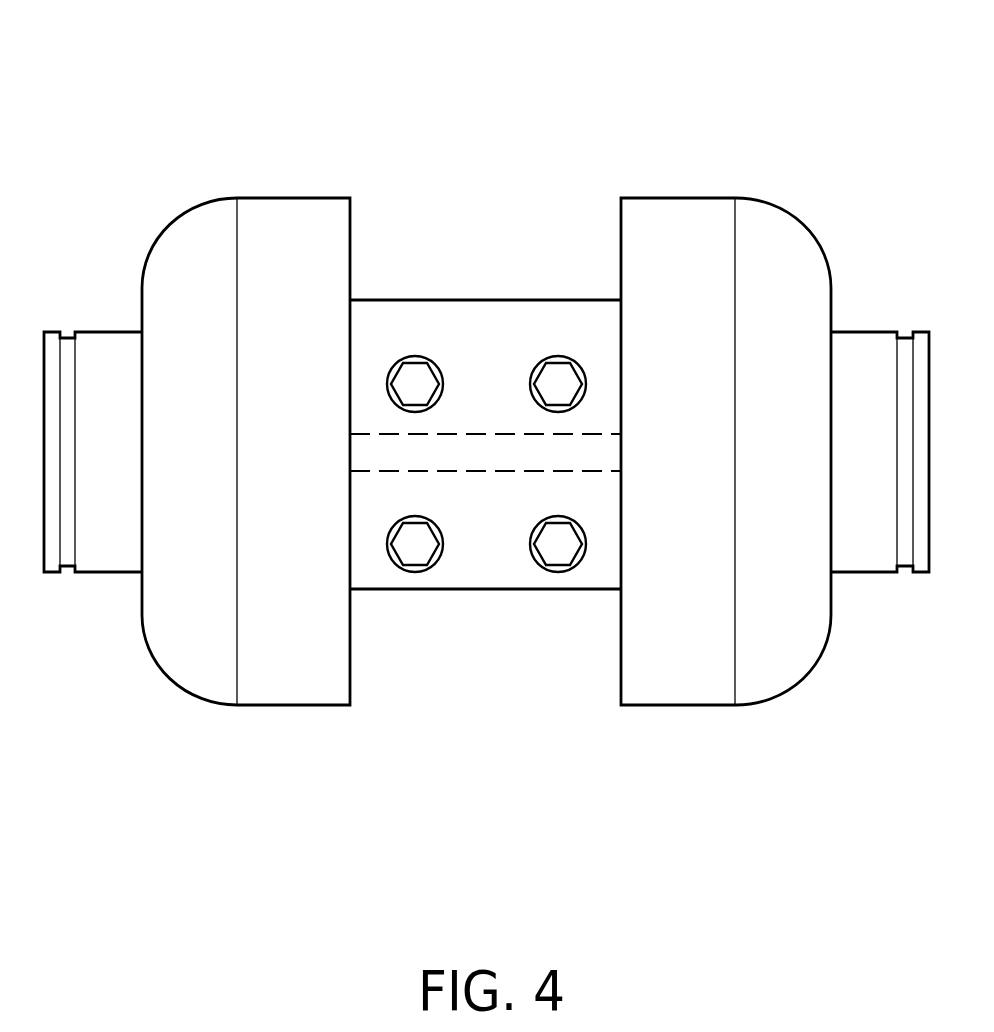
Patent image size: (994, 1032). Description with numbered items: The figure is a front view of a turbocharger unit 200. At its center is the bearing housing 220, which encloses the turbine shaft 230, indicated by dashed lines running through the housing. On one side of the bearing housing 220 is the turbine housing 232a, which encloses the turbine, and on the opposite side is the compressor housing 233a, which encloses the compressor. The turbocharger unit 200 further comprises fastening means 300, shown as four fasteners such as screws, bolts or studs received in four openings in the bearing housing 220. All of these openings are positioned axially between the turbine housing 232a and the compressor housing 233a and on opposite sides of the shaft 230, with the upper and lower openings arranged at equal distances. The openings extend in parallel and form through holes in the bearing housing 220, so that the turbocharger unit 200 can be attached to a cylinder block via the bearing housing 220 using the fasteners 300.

The turbocharger unit 200 is at (522, 82).
The bearing housing 220 is at (503, 409).
The turbine shaft 230 is at (480, 473).
The turbine housing 232a is at (185, 265).
The compressor housing 233a is at (788, 265).
The fastening means 300 is at (413, 372).